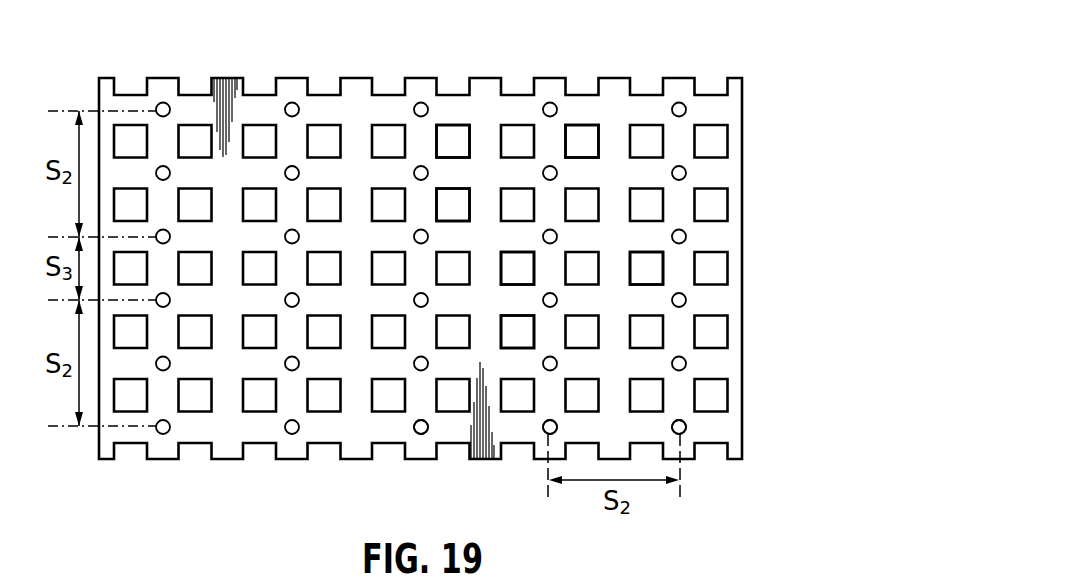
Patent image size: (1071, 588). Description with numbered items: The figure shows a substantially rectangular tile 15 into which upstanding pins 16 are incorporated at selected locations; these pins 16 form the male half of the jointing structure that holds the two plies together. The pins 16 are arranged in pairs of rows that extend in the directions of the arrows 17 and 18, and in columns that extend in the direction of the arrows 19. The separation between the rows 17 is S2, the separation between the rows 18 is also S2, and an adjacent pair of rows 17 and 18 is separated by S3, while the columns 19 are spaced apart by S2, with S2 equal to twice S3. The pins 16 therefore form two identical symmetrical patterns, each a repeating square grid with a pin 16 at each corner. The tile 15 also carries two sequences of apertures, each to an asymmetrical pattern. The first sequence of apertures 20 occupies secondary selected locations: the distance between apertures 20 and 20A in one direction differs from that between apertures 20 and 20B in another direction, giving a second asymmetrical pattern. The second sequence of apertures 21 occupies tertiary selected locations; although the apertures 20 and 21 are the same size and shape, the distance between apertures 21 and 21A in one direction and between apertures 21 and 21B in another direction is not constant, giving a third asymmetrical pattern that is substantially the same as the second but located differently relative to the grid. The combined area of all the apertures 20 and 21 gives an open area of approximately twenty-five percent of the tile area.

The tile 15 is at (272, 478).
The pin 16 is at (414, 430).
The row 17 is at (759, 233).
The row 18 is at (759, 297).
The column 19 is at (546, 472).
The aperture 20 is at (452, 138).
The aperture 20A is at (582, 138).
The aperture 20B is at (450, 208).
The aperture 21 is at (522, 265).
The aperture 21A is at (643, 263).
The aperture 21B is at (515, 337).